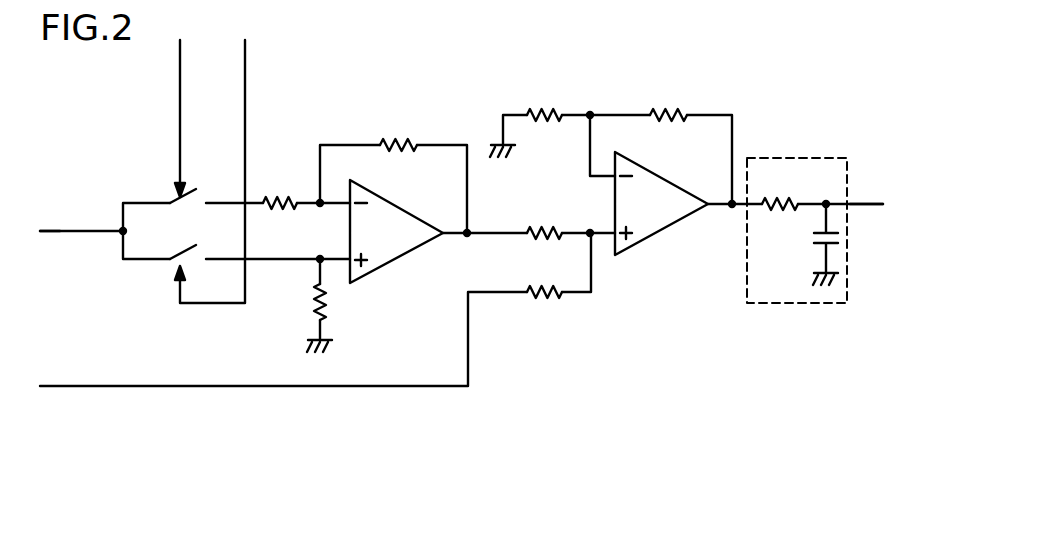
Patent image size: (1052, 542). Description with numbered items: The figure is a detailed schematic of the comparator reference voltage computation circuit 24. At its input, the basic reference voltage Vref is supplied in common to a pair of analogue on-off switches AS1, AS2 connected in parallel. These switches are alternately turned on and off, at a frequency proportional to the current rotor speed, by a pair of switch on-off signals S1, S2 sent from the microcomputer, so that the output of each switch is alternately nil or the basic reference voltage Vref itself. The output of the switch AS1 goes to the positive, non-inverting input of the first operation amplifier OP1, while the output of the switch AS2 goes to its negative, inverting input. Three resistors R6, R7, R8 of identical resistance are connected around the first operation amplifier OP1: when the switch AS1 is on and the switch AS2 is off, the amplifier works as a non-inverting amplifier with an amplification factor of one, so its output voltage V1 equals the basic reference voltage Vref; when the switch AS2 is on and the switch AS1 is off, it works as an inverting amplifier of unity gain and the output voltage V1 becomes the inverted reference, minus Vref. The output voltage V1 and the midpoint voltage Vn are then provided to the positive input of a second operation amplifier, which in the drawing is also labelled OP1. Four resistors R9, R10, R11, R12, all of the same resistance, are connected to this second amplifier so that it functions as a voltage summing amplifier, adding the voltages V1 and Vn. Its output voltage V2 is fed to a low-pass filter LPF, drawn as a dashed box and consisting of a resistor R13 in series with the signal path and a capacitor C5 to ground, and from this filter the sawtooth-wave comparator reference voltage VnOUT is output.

The comparator reference voltage computation circuit 24 is at (452, 100).
The switch on-off signal S1 is at (247, 68).
The switch on-off signal S2 is at (182, 68).
The analogue on-off switch AS1 is at (174, 269).
The analogue on-off switch AS2 is at (178, 199).
The resistor R6 is at (280, 189).
The resistor R7 is at (393, 173).
The resistor R8 is at (305, 305).
The resistor R9 is at (540, 119).
The resistor R10 is at (659, 142).
The resistor R11 is at (569, 219).
The resistor R12 is at (557, 265).
The resistor R13 is at (819, 190).
The capacitor C5 is at (807, 244).
The first operation amplifier OP1 is at (529, 217).
The output voltage of the first operation amplifier V1 is at (484, 236).
The output voltage of the second operation amplifier V2 is at (728, 212).
The low-pass filter LPF is at (800, 156).
The basic reference voltage Vref is at (66, 228).
The midpoint voltage Vn is at (61, 383).
The sawtooth-wave comparator reference voltage VnOUT is at (870, 200).